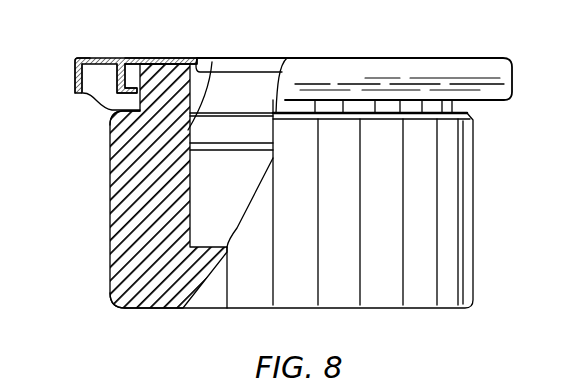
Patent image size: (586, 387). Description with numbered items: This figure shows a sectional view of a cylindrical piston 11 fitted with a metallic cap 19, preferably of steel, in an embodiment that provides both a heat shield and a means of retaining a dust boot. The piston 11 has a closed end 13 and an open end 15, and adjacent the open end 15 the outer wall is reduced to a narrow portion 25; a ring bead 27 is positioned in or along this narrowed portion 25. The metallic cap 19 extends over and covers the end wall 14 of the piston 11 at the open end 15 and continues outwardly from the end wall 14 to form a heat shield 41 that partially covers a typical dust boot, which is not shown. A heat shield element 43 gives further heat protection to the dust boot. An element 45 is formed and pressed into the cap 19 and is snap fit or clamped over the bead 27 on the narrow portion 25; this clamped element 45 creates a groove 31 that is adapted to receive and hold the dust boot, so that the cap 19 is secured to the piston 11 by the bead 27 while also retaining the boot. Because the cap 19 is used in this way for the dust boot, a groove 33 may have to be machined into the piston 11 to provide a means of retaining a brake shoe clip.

The piston 11 is at (477, 226).
The closed end 13 is at (297, 300).
The end wall 14 is at (176, 59).
The open end 15 is at (227, 188).
The metallic cap 19 is at (254, 70).
The narrow portion 25 is at (163, 60).
The ring bead 27 is at (136, 62).
The groove 31 is at (110, 110).
The groove 33 is at (212, 62).
The heat shield 41 is at (106, 54).
The heat shield element 43 is at (75, 89).
The element 45 is at (105, 89).